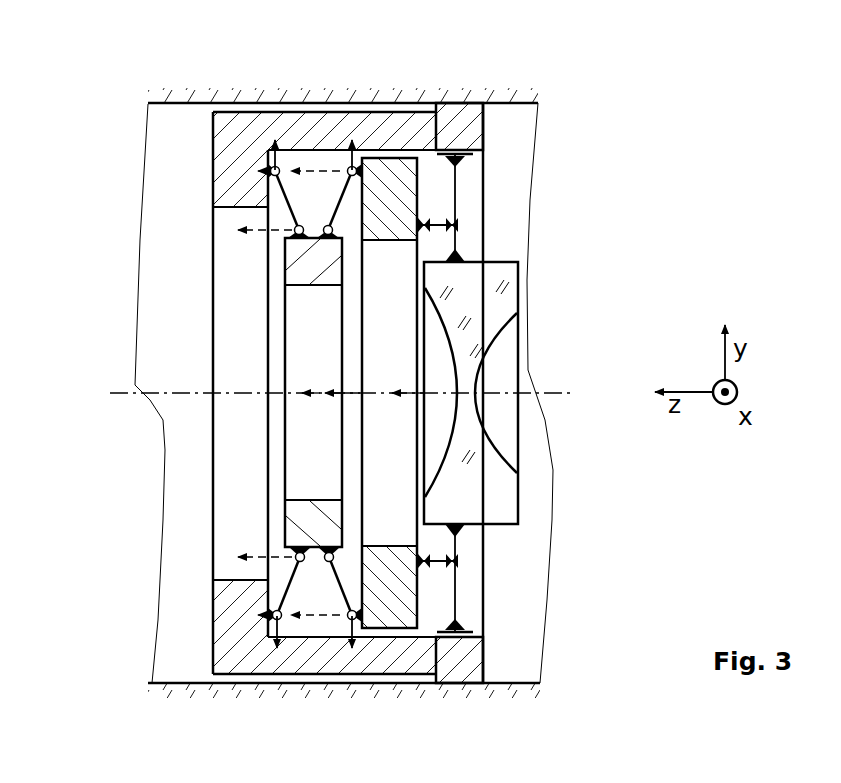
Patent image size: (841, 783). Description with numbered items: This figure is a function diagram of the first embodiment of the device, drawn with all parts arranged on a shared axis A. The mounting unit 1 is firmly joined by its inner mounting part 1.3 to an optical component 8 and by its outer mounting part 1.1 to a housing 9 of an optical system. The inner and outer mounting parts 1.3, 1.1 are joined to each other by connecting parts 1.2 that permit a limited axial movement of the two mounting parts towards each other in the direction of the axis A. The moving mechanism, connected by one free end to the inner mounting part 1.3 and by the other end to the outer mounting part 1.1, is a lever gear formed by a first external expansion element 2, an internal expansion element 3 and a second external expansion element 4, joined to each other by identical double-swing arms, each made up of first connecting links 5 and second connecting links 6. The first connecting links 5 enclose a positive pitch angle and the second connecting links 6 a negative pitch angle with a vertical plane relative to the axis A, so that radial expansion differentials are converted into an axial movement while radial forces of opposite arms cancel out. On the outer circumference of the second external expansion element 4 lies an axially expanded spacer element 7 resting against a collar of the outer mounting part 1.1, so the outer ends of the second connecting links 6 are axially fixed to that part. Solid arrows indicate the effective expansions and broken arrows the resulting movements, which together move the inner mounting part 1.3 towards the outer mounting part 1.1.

The mounting unit 1 is at (603, 393).
The outer mounting part 1.1 is at (455, 133).
The connecting parts 1.2 is at (455, 187).
The inner mounting part 1.3 is at (455, 247).
The first external expansion element 2 is at (385, 193).
The internal expansion element 3 is at (337, 217).
The second external expansion element 4 is at (240, 149).
The first connecting links 5 is at (323, 262).
The second connecting links 6 is at (285, 207).
The spacer element 7 is at (330, 653).
The optical component 8 is at (502, 300).
The housing 9 is at (502, 95).
The axis A is at (177, 390).